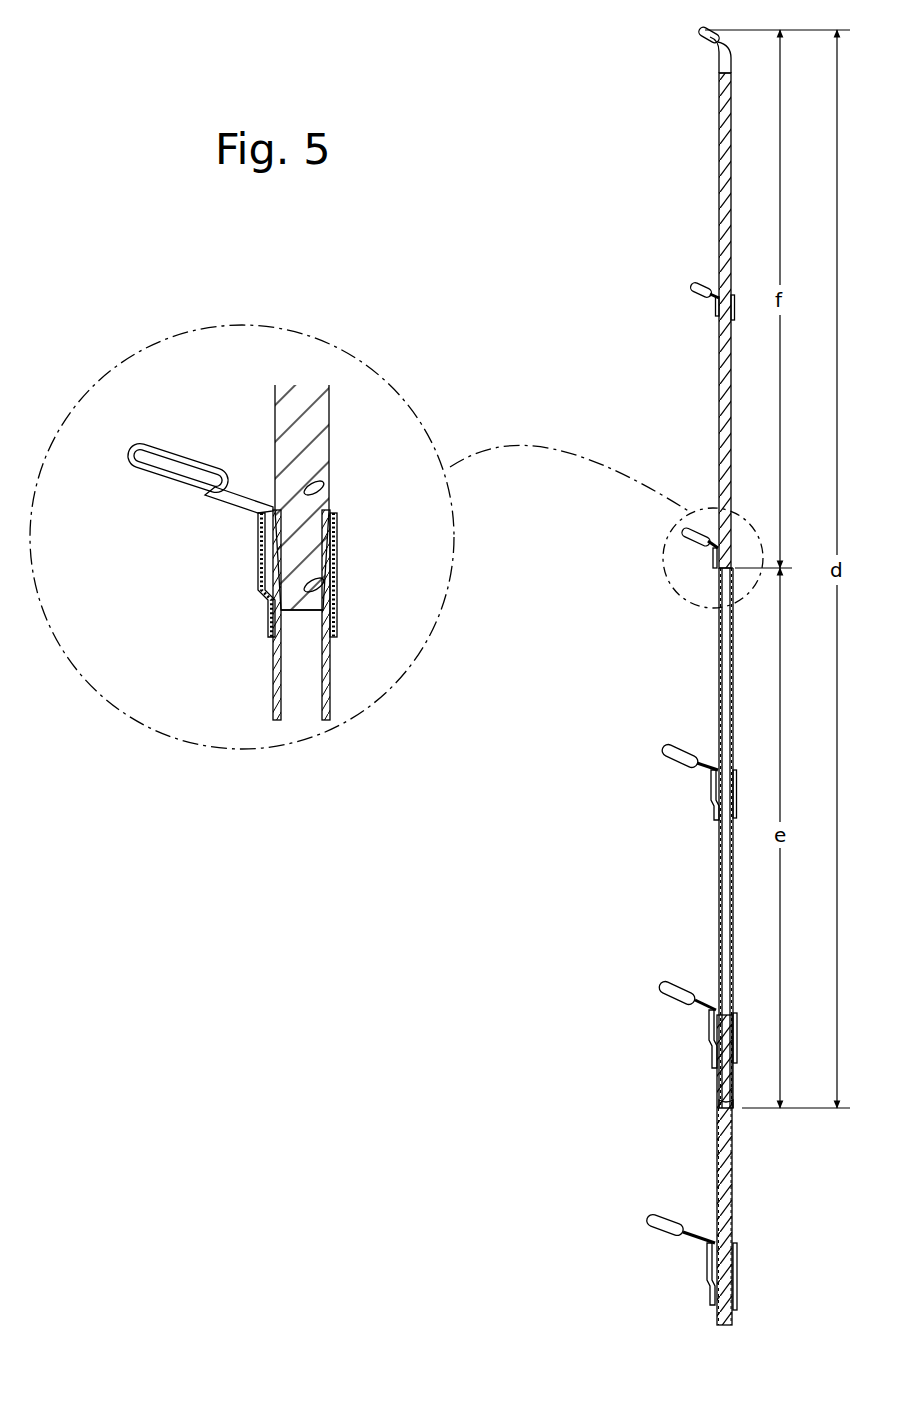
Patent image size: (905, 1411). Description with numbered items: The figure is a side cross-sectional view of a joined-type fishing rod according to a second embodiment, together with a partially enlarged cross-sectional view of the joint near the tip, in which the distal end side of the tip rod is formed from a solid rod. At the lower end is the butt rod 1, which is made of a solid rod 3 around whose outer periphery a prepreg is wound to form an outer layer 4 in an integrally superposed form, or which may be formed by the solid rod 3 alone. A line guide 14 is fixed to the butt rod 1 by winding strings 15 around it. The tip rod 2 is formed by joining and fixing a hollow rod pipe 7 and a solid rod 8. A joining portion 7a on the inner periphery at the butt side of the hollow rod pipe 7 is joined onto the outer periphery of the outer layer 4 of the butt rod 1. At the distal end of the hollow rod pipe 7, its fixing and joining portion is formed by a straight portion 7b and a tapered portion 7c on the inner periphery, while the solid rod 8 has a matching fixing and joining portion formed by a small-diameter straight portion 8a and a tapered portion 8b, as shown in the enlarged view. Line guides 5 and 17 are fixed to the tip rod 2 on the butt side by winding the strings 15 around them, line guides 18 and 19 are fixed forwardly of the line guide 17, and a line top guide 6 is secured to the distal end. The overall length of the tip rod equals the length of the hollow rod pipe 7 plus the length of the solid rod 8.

The butt rod 1 is at (704, 1163).
The tip rod 2 is at (708, 897).
The solid rod 3 is at (733, 1183).
The outer layer 4 is at (733, 1212).
The line guide 5 is at (660, 983).
The line top guide 6 is at (700, 33).
The hollow rod pipe 7 is at (708, 645).
The joining portion 7a is at (722, 1105).
The straight portion 7b is at (322, 580).
The tapered portion 7c is at (322, 470).
The solid rod 8 is at (708, 158).
The small-diameter straight portion 8a is at (330, 608).
The tapered portion 8b is at (335, 510).
The line guide 14 is at (645, 1218).
The strings 15 is at (256, 555).
The line guide 17 is at (662, 748).
The line guide 18 is at (686, 533).
The line guide 19 is at (690, 288).